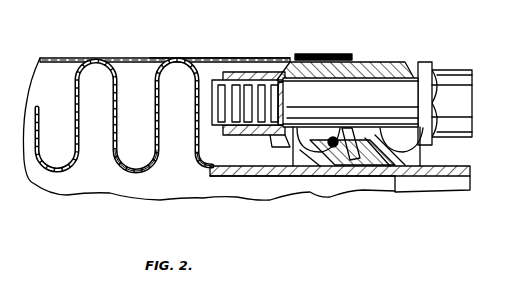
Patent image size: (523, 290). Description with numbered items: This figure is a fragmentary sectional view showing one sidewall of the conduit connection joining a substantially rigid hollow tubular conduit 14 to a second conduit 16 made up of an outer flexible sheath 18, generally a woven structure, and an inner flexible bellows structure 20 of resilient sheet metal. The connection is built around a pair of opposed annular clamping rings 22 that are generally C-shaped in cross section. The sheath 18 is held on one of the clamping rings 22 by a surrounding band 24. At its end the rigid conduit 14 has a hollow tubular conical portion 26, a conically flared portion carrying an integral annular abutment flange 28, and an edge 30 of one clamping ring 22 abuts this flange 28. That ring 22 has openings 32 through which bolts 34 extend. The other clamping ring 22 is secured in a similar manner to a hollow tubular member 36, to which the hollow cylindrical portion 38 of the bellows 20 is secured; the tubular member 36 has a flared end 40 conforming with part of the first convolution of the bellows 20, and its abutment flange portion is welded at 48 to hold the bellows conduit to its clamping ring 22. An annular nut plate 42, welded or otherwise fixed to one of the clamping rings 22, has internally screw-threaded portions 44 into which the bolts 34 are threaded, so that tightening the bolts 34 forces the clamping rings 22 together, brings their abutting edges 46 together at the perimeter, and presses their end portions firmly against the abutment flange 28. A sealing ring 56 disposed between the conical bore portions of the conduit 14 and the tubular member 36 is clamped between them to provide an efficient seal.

The hollow tubular conduit 14 is at (462, 192).
The second conduit 16 is at (77, 58).
The outer flexible sheath 18 is at (155, 58).
The inner flexible bellows structure 20 is at (37, 110).
The clamping rings 22 is at (353, 60).
The surrounding band 24 is at (322, 55).
The hollow tubular conical portion 26 is at (382, 142).
The annular abutment flange 28 is at (362, 142).
The edge 30 is at (363, 177).
The openings 32 is at (420, 90).
The bolts 34 is at (410, 117).
The hollow tubular member 36 is at (268, 168).
The hollow cylindrical portion 38 is at (198, 158).
The flared end 40 is at (180, 172).
The nut plate 42 is at (232, 93).
The internally screw-threaded portions 44 is at (235, 88).
The abutting edges 46 is at (392, 72).
The weld 48 is at (313, 176).
The sealing ring 56 is at (386, 180).